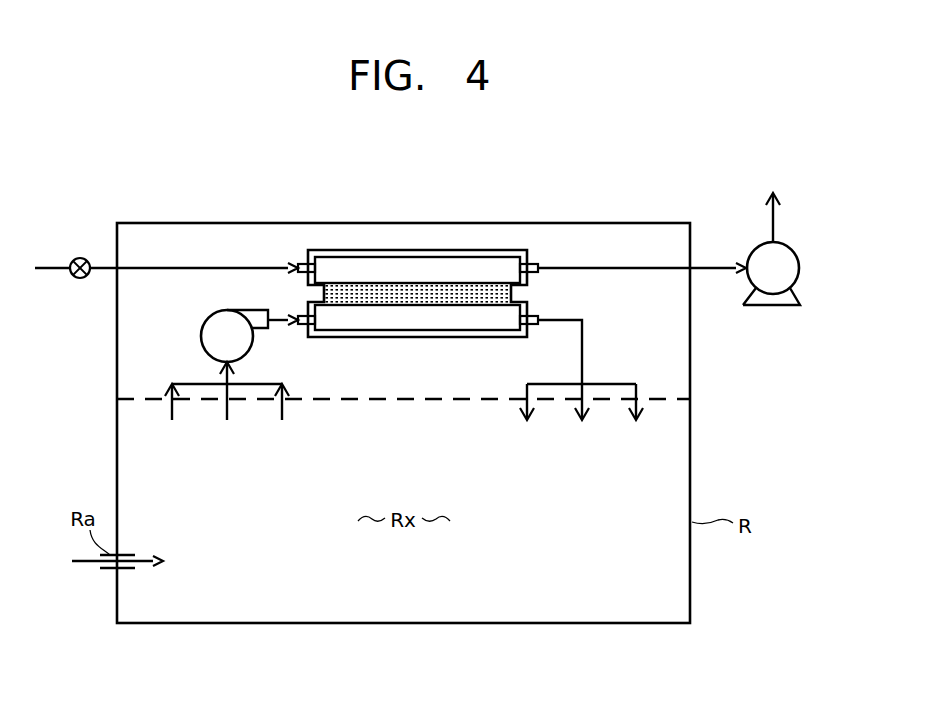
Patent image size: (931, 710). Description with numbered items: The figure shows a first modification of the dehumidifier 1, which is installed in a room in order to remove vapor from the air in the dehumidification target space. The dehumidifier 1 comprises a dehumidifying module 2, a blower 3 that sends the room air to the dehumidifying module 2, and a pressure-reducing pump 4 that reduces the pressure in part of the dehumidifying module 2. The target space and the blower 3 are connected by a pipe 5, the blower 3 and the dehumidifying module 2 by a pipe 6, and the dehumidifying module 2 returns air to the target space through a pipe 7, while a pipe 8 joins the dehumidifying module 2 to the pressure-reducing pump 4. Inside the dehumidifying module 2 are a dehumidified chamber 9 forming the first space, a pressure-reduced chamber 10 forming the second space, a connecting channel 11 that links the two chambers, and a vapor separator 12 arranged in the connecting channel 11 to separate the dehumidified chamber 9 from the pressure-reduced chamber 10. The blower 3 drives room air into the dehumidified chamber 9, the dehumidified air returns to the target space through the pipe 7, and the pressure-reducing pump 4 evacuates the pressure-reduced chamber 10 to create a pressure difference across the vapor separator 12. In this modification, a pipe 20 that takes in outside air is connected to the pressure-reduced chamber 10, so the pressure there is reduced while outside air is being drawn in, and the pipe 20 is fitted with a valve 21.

The dehumidifier 1 is at (557, 241).
The dehumidifying module 2 is at (415, 242).
The blower 3 is at (210, 318).
The pressure-reducing pump 4 is at (798, 258).
The pipe 5 is at (227, 407).
The pipe 6 is at (277, 318).
The pipe 7 is at (582, 364).
The pipe 8 is at (600, 268).
The dehumidified chamber 9 is at (350, 330).
The pressure-reduced chamber 10 is at (397, 250).
The connecting channel 11 is at (324, 287).
The vapor separator 12 is at (377, 291).
The pipe 20 is at (158, 268).
The valve 21 is at (80, 258).